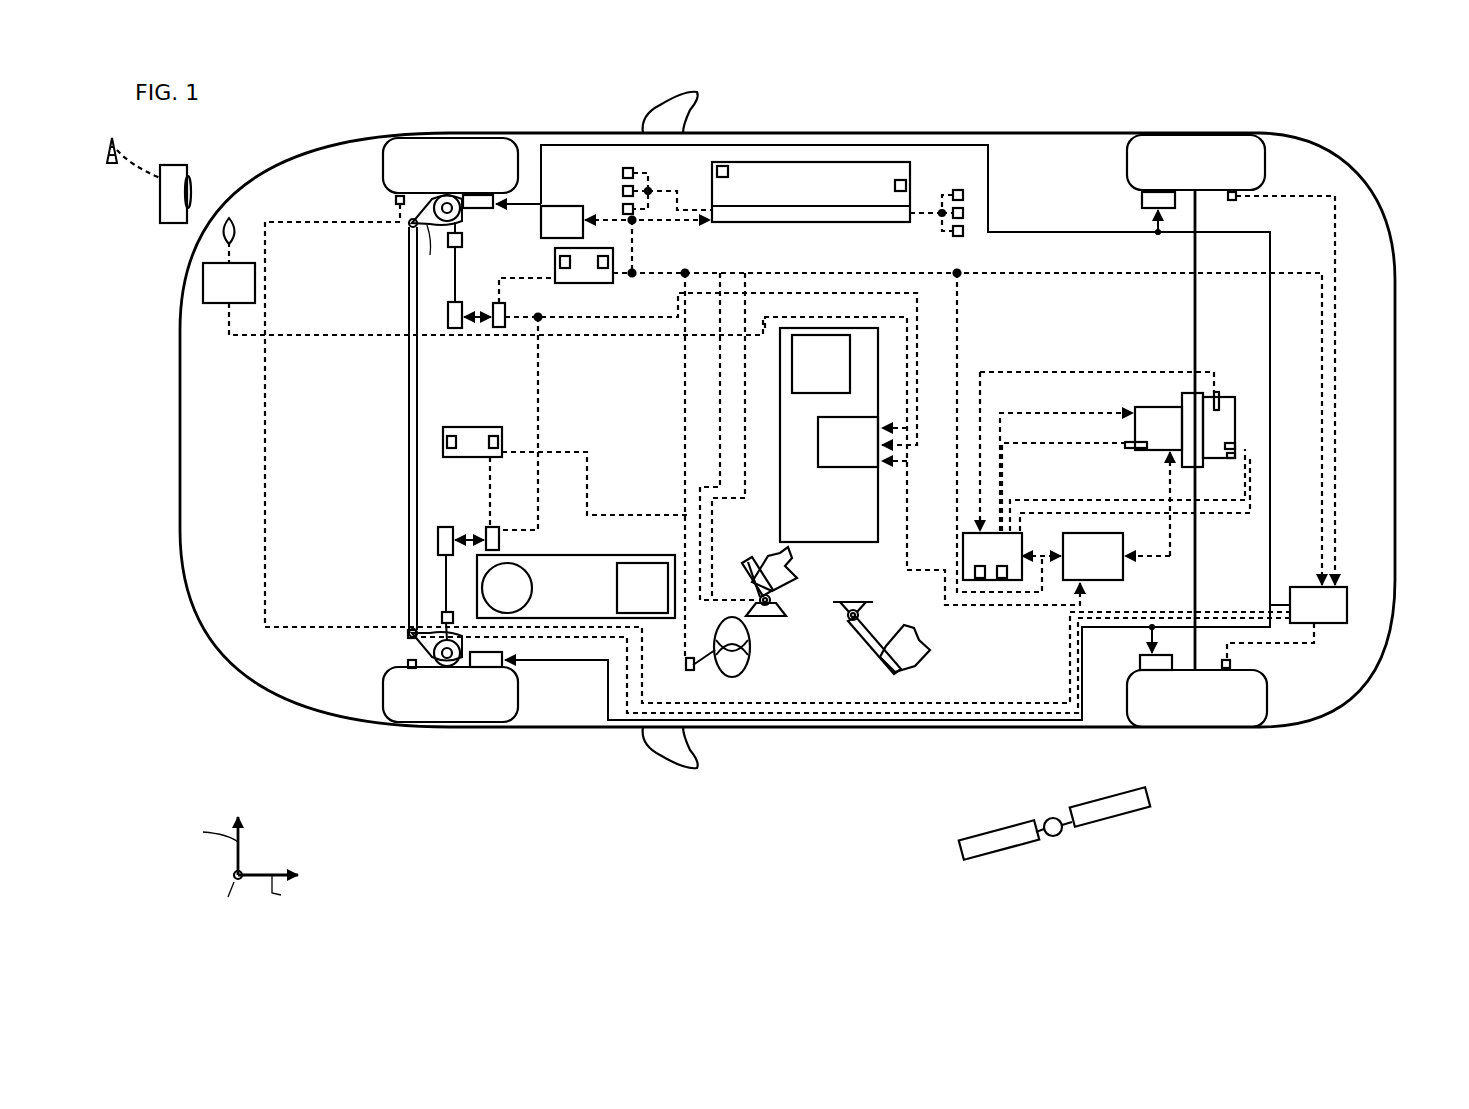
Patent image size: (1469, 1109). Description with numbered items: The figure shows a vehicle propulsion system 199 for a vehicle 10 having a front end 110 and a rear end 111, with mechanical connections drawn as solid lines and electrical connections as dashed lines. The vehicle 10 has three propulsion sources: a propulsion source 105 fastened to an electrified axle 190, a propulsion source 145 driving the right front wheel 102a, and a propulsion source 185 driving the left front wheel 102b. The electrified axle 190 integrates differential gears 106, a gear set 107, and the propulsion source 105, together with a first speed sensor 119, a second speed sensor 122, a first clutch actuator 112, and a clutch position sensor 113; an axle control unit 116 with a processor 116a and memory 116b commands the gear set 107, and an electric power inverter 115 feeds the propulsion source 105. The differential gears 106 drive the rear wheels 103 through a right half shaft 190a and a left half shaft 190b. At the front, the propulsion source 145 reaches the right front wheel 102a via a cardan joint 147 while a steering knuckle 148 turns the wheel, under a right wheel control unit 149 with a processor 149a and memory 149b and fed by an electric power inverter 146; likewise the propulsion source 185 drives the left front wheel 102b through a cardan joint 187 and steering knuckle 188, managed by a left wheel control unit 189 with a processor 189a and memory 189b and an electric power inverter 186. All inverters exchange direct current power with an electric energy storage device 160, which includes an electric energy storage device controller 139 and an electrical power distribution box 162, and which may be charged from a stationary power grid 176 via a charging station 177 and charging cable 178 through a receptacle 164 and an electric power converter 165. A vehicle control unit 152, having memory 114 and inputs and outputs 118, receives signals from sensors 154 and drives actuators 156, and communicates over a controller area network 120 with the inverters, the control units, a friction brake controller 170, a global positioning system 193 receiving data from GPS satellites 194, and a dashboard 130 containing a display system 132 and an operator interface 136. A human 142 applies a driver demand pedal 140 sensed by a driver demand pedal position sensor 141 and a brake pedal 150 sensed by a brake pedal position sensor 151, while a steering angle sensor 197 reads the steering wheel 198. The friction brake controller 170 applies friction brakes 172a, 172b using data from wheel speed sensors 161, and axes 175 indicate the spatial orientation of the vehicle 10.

The vehicle 10 is at (1015, 133).
The right front wheel 102a is at (475, 140).
The left front wheel 102b is at (412, 722).
The rear wheels 103 is at (1198, 135).
The propulsion source 105 is at (1133, 450).
The differential gears 106 is at (1196, 400).
The gear set 107 is at (1228, 418).
The front end 110 is at (158, 390).
The rear end 111 is at (1440, 170).
The first clutch actuator 112 is at (1230, 458).
The clutch position sensor 113 is at (1236, 444).
The memory 114 is at (717, 168).
The electric power inverter 115 is at (1116, 556).
The axle control unit 116 is at (1106, 476).
The processor 116a is at (980, 580).
The memory 116b is at (1003, 580).
The inputs and outputs 118 is at (858, 212).
The first speed sensor 119 is at (1140, 452).
The controller area network 120 is at (780, 272).
The second speed sensor 122 is at (1219, 400).
The dashboard 130 is at (525, 558).
The display system 132 is at (507, 588).
The operator interface 136 is at (642, 588).
The electric energy storage device controller 139 is at (821, 364).
The driver demand pedal 140 is at (750, 582).
The driver demand pedal position sensor 141 is at (770, 600).
The human 142 is at (778, 555).
The propulsion source 145 is at (448, 312).
The electric power inverter 146 is at (505, 315).
The cardan joint 147 is at (463, 245).
The steering knuckle 148 is at (434, 428).
The right wheel control unit 149 is at (556, 275).
The processor 149a is at (565, 268).
The memory 149b is at (604, 268).
The brake pedal 150 is at (888, 655).
The brake pedal position sensor 151 is at (850, 622).
The vehicle control unit 152 is at (811, 193).
The sensors 154 is at (615, 196).
The actuators 156 is at (968, 222).
The electric energy storage device 160 is at (829, 435).
The wheel position or speed sensors 161 is at (396, 198).
The electrical power distribution box 162 is at (848, 442).
The receptacle 164 is at (232, 226).
The electric power converter 165 is at (229, 272).
The friction brake controller 170 is at (1318, 605).
The friction brake 172a is at (472, 208).
The friction brake 172b is at (1142, 202).
The axes 175 is at (268, 825).
The stationary power grid 176 is at (117, 140).
The charging station 177 is at (175, 165).
The charging cable 178 is at (191, 190).
The propulsion source 185 is at (440, 535).
The electric power inverter 186 is at (492, 527).
The cardan joint 187 is at (442, 614).
The steering knuckle 188 is at (408, 634).
The left wheel control unit 189 is at (472, 442).
The processor 189a is at (450, 448).
The memory 189b is at (495, 448).
The electrified axle 190 is at (1172, 365).
The right half shaft 190a is at (1196, 326).
The left half shaft 190b is at (1195, 580).
The global positioning system 193 is at (625, 222).
The GPS satellites 194 is at (1098, 822).
The steering angle sensor 197 is at (682, 668).
The steering wheel 198 is at (748, 665).
The vehicle propulsion system 199 is at (950, 100).